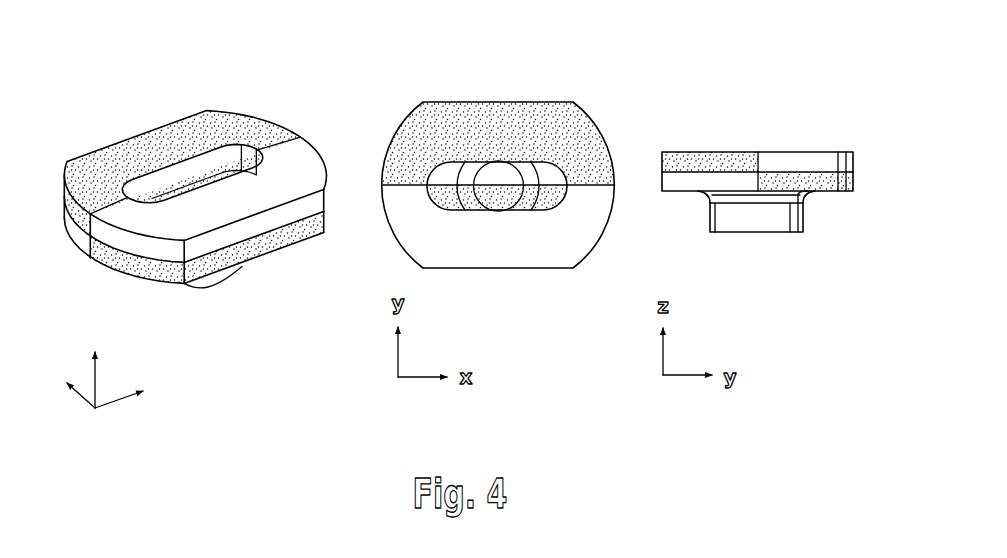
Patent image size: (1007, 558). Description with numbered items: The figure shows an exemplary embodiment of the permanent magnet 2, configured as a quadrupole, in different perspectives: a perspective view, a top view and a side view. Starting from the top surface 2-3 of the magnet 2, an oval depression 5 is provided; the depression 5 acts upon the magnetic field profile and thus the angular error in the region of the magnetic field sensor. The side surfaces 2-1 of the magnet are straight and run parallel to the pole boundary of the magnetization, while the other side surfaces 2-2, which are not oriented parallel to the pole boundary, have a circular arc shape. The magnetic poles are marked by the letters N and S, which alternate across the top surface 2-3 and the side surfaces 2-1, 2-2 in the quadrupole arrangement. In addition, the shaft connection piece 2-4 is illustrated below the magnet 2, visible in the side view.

The permanent magnet 2 is at (198, 99).
The side surfaces 2-1 is at (276, 244).
The side surfaces 2-2 is at (142, 249).
The top surface 2-3 is at (261, 128).
The shaft connection piece 2-4 is at (735, 222).
The depression 5 is at (228, 146).
The north pole N is at (302, 168).
The south pole S is at (148, 141).